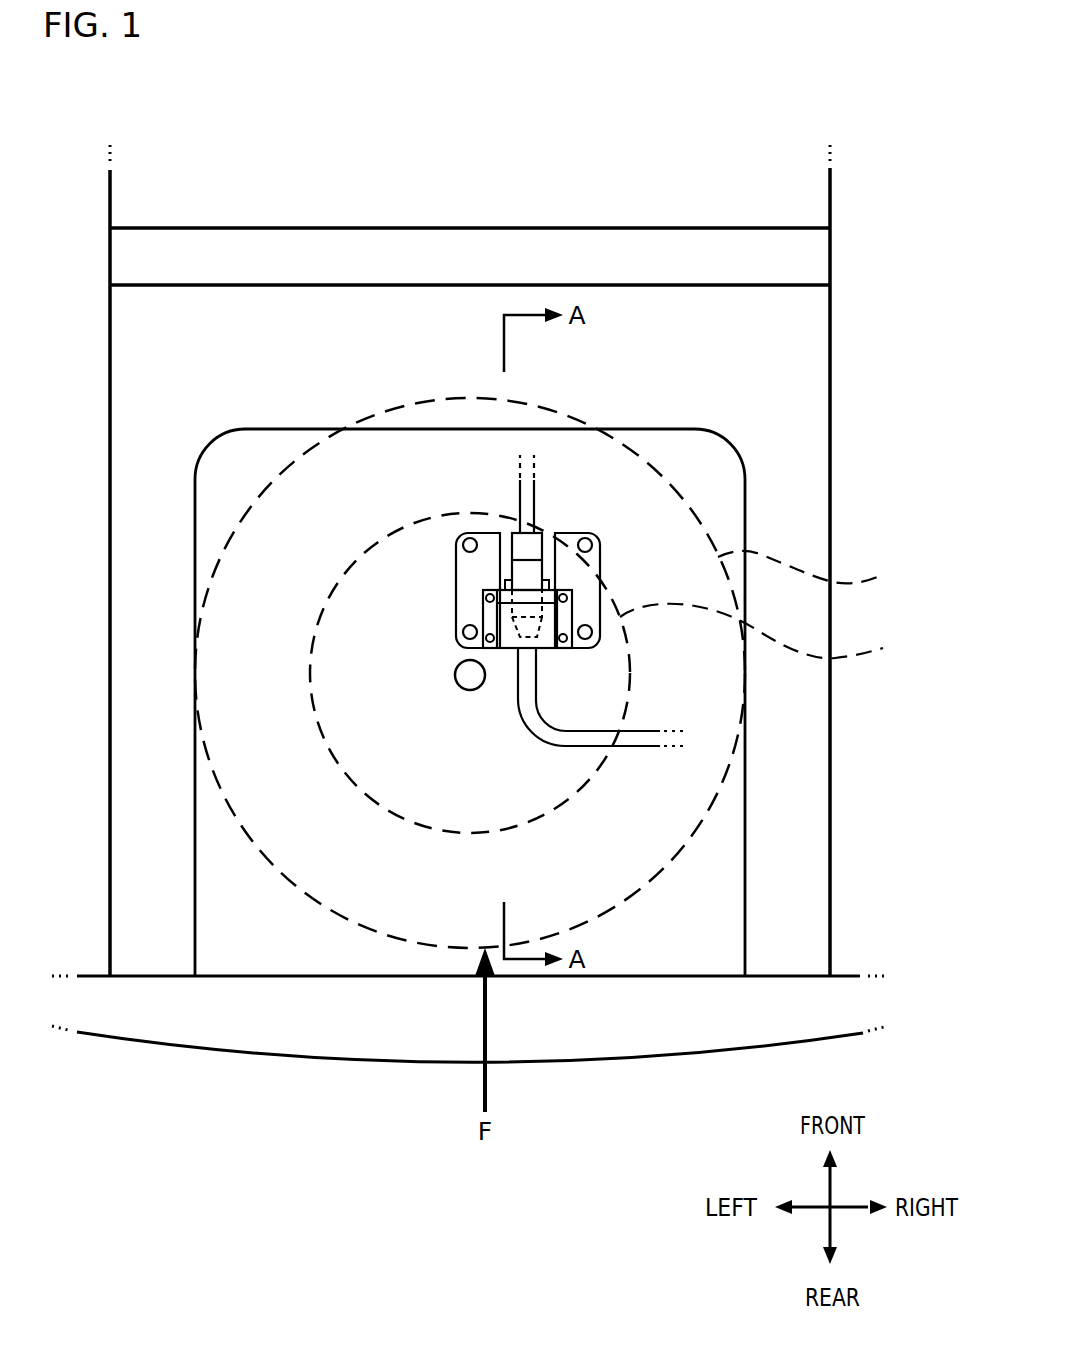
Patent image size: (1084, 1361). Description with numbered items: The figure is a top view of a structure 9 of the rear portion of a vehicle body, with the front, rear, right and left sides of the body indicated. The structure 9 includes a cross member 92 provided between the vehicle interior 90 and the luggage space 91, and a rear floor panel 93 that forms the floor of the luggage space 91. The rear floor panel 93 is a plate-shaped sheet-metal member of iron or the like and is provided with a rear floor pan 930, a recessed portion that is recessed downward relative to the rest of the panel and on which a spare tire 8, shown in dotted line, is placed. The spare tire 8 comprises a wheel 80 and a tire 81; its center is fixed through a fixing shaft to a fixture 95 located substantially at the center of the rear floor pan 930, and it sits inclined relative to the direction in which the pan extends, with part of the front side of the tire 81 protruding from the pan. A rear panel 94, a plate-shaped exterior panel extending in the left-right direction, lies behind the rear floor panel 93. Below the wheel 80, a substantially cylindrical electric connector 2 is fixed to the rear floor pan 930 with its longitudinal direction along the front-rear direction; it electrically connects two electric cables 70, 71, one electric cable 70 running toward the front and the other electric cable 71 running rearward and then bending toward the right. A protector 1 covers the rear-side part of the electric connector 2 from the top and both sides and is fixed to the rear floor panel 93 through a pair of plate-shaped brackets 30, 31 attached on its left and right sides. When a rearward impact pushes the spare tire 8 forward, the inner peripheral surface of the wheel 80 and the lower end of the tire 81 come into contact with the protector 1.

The structure of the rear portion of the vehicle body 9 is at (865, 180).
The vehicle interior 90 is at (468, 152).
The luggage space 91 is at (468, 326).
The cross member 92 is at (830, 253).
The rear floor panel 93 is at (830, 327).
The rear panel 94 is at (847, 976).
The fixture 95 is at (461, 665).
The rear floor pan 930 is at (745, 512).
The spare tire 8 is at (662, 474).
The wheel 80 is at (762, 631).
The tire 81 is at (811, 562).
The electric cable 70 is at (521, 530).
The electric cable 71 is at (553, 722).
The protector 1 is at (536, 588).
The electric connector 2 is at (530, 547).
The bracket 30 is at (601, 560).
The bracket 31 is at (456, 567).